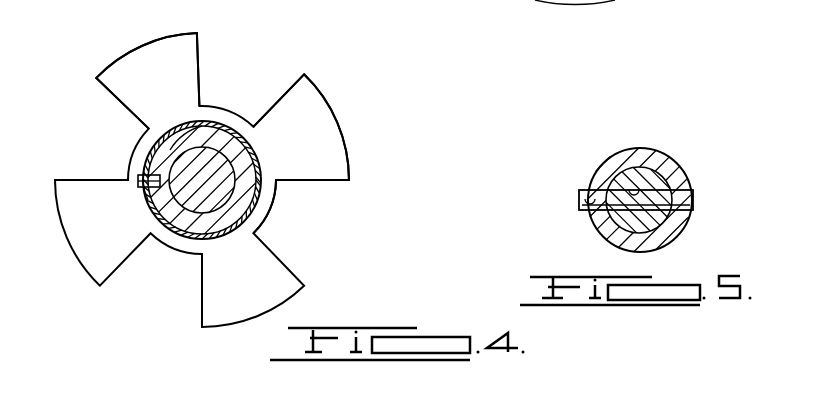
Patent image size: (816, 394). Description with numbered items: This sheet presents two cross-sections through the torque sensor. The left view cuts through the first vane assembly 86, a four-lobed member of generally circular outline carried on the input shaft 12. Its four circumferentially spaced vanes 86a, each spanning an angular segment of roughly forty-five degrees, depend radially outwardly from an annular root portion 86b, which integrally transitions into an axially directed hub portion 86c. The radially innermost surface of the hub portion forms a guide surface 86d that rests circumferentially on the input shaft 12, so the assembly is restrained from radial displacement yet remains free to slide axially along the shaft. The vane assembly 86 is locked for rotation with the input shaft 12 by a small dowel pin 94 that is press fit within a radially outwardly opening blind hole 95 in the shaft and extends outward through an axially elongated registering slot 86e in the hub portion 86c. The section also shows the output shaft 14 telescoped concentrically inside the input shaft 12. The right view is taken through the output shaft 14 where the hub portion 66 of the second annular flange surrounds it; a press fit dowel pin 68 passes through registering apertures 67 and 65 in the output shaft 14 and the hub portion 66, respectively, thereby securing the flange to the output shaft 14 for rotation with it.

In FIG. 4, the first vane assembly 86 is at (330, 96).
In FIG. 4, the vane 86a is at (133, 54).
In FIG. 4, the annular root portion 86b is at (225, 117).
In FIG. 4, the hub portion 86c is at (257, 203).
In FIG. 4, the guide surface 86d is at (232, 152).
In FIG. 4, the registering slot 86e is at (145, 178).
In FIG. 4, the output shaft 14 is at (172, 127).
In FIG. 5, the output shaft 14 is at (650, 225).
In FIG. 4, the input shaft 12 is at (213, 228).
In FIG. 4, the dowel pin 94 is at (197, 155).
In FIG. 4, the blind hole 95 is at (147, 197).
In FIG. 5, the hub portion 66 is at (640, 182).
In FIG. 5, the aperture 67 is at (645, 191).
In FIG. 5, the aperture 65 is at (578, 197).
In FIG. 5, the press fit dowel pin 68 is at (680, 200).